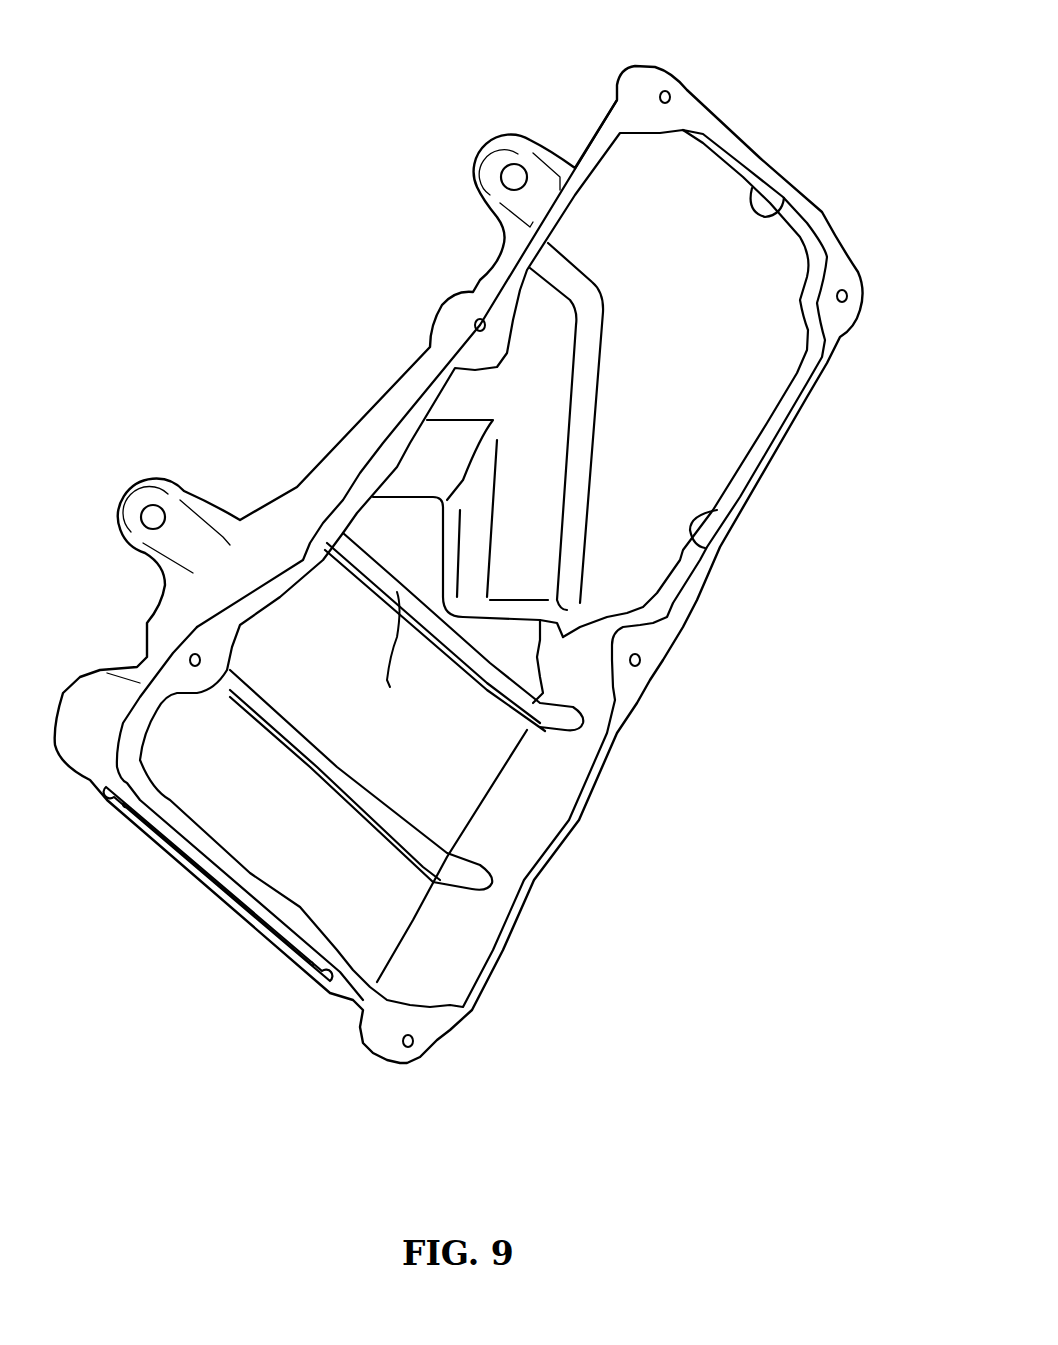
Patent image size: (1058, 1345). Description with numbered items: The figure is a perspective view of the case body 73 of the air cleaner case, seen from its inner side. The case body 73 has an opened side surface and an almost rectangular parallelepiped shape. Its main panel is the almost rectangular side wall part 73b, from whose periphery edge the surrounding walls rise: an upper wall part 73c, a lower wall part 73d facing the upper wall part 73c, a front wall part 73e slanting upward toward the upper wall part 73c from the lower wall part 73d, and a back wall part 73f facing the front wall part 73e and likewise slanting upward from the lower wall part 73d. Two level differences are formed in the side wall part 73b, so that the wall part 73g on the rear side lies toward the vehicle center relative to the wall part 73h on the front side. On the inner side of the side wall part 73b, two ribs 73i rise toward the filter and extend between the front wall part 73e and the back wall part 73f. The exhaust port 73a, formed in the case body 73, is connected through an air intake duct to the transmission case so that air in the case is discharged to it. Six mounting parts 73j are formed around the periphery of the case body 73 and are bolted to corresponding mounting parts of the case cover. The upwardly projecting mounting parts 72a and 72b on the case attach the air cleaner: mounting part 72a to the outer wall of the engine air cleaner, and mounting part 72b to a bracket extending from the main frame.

The case body 73 is at (275, 175).
The mounting part 72a is at (503, 160).
The mounting part 72b is at (143, 497).
The exhaust port 73a is at (217, 883).
The side wall part 73b is at (600, 540).
The upper wall part 73c is at (782, 197).
The lower wall part 73d is at (337, 987).
The front wall part 73e is at (712, 512).
The back wall part 73f is at (370, 437).
The wall part 73g is at (447, 747).
The wall part 73h is at (700, 377).
The rib 73i is at (263, 710).
The mounting part 73j is at (665, 91).